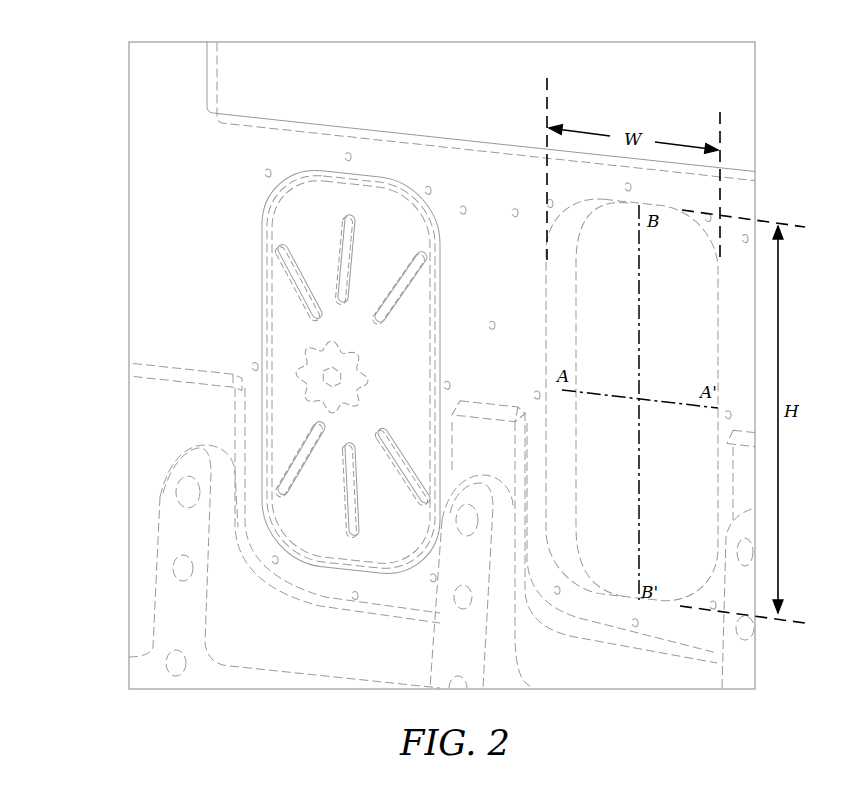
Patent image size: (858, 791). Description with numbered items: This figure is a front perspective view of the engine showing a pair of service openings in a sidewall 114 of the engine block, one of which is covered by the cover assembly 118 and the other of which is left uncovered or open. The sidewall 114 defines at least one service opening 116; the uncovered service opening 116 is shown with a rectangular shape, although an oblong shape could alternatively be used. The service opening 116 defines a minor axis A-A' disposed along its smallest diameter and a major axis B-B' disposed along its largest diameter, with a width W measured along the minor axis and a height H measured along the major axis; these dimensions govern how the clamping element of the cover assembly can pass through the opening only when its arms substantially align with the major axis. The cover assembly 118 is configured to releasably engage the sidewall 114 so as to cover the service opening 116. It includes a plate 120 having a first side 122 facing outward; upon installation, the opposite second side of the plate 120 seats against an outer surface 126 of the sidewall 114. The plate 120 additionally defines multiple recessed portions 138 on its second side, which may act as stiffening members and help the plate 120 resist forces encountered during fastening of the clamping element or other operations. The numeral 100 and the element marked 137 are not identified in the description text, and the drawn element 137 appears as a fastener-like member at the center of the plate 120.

The mounting assembly 100 is at (80, 82).
The sidewall 114 is at (492, 185).
The service opening 116 is at (597, 329).
The cover assembly 118 is at (375, 195).
The plate 120 is at (323, 207).
The first side 122 is at (415, 381).
The outer surface 126 is at (512, 297).
The knob 137 is at (323, 377).
The recessed portions 138 is at (287, 260).